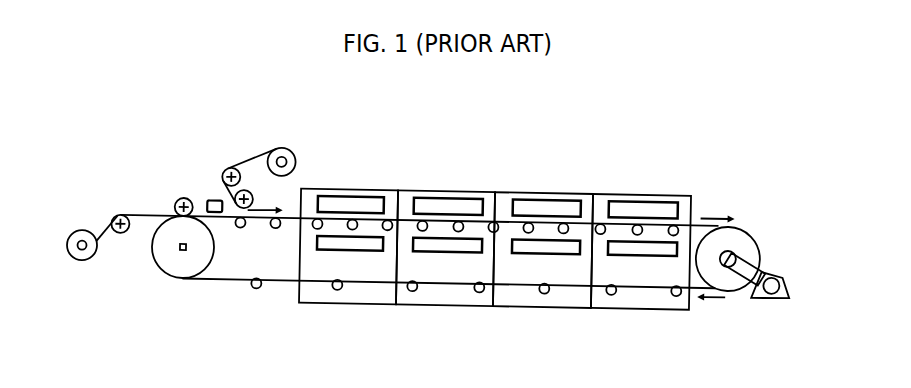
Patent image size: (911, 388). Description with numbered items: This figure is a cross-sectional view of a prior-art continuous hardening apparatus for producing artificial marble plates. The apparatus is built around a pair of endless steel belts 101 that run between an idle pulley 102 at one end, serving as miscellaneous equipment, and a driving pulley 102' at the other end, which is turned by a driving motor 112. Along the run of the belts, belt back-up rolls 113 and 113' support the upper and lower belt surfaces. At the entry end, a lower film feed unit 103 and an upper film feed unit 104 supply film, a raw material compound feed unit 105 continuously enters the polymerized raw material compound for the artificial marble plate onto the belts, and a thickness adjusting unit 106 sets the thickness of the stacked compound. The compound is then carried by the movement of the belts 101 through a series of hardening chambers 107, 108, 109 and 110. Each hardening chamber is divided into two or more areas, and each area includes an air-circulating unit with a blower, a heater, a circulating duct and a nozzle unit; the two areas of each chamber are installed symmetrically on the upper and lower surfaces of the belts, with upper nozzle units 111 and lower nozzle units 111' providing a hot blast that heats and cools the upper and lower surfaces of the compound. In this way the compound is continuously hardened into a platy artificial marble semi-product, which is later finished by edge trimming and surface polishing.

The endless steel belts 101 is at (223, 279).
The idle pulley 102 is at (168, 275).
The driving pulley 102' is at (737, 293).
The lower film feed unit 103 is at (76, 261).
The upper film feed unit 104 is at (295, 152).
The raw material compound feed unit 105 is at (204, 196).
The thickness adjusting unit 106 is at (252, 197).
The hardening chamber 107 is at (338, 187).
The hardening chamber 108 is at (482, 187).
The hardening chamber 109 is at (568, 190).
The hardening chamber 110 is at (635, 192).
The nozzle unit 111 is at (498, 164).
The nozzle unit 111' is at (497, 297).
The driving motor 112 is at (780, 278).
The belt back-up rolls 113 is at (456, 247).
The belt back-up rolls 113' is at (466, 318).